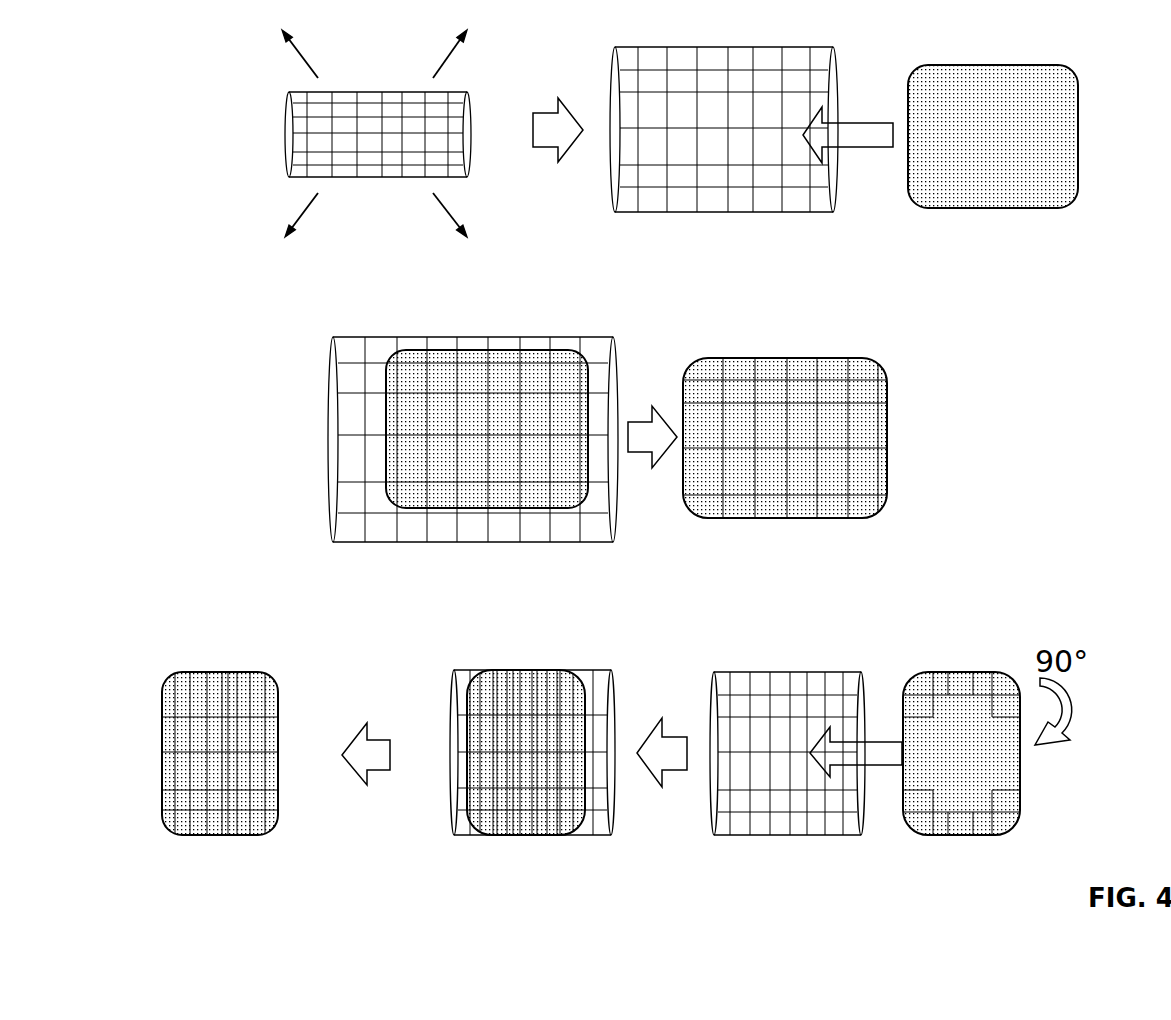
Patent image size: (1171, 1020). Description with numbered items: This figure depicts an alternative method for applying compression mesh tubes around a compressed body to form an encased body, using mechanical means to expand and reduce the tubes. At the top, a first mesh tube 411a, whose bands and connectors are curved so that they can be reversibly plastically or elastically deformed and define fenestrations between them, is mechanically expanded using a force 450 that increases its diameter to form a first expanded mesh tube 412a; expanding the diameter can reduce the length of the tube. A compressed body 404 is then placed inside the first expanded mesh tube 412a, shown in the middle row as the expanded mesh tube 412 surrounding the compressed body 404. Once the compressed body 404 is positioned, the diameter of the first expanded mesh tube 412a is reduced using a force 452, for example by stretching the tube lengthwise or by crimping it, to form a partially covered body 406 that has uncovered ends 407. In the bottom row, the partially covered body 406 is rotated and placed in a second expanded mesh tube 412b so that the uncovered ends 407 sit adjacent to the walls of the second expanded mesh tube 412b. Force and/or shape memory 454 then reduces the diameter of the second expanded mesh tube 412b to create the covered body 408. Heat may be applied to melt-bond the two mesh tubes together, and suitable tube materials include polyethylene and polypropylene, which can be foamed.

The force 450 is at (292, 50).
The first mesh tube 411a is at (372, 97).
The first expanded mesh tube 412a is at (743, 203).
The compressed body 404 is at (1045, 97).
The tubular sleeve around body 412 is at (383, 350).
The force 452 is at (652, 337).
The partially covered body 406 is at (858, 393).
The uncovered ends 407 is at (963, 757).
The second expanded mesh tube 412b is at (602, 680).
The force and/or shape memory 454 is at (367, 672).
The covered body 408 is at (253, 801).